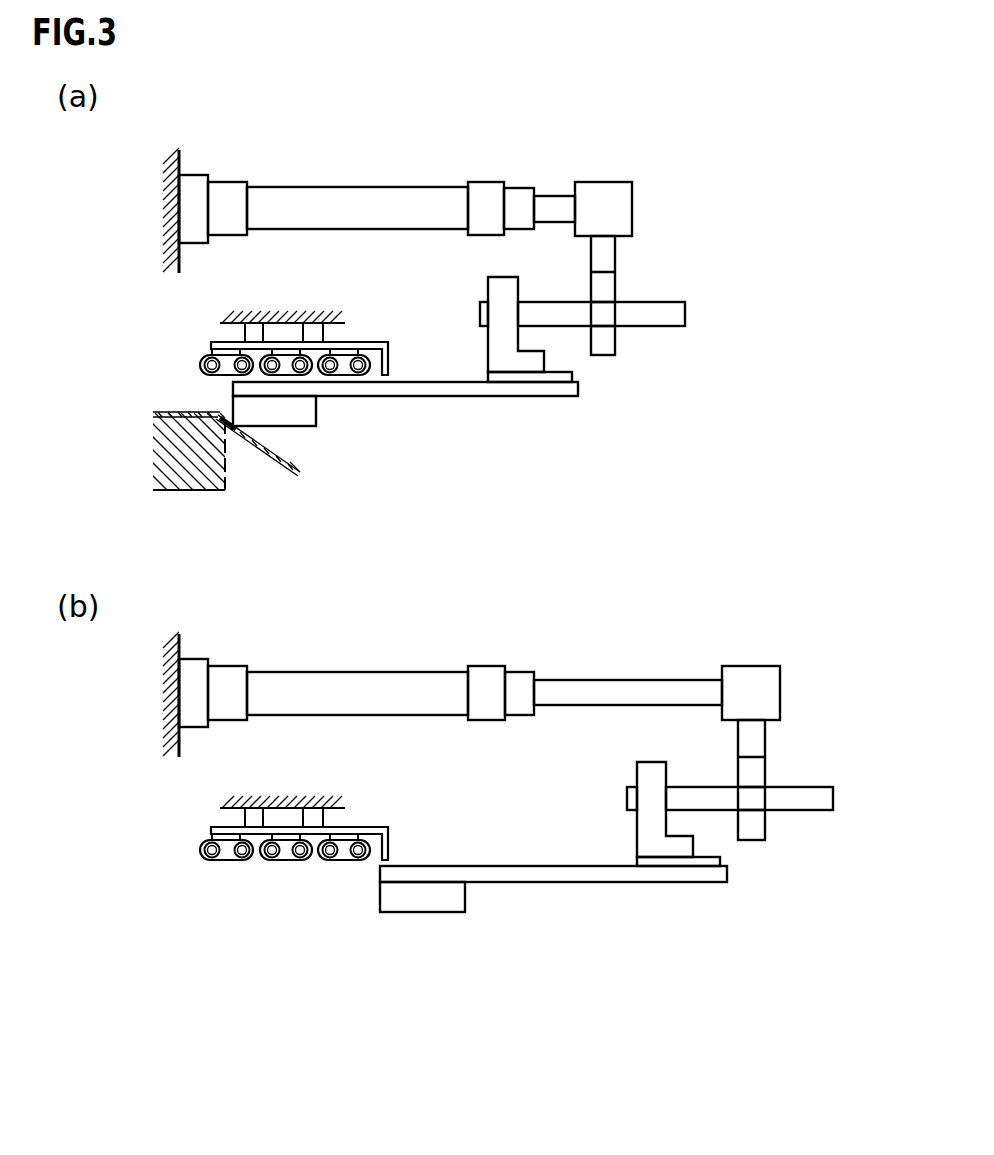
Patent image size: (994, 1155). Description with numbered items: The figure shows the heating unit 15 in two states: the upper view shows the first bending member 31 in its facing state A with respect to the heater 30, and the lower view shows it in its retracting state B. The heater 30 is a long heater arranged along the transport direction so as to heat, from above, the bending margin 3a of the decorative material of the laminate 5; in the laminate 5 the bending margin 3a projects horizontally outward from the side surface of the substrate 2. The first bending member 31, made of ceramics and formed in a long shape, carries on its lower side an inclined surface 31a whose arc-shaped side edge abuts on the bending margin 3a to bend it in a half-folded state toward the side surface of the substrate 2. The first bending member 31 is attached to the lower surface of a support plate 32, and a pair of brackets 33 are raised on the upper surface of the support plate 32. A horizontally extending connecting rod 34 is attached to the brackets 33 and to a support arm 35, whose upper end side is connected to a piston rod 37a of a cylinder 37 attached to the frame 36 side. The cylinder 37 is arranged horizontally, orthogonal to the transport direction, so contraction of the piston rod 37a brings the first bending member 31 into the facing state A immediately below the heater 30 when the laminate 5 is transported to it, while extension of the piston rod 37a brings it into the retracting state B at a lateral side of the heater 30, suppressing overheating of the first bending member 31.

The substrate 2 is at (198, 492).
The bending margin 3a is at (290, 461).
The laminate 5 is at (153, 465).
The heating unit 15 is at (505, 477).
The heater 30 is at (179, 369).
The first bending member 31 is at (233, 420).
The inclined surface 31a is at (235, 430).
The support plate 32 is at (448, 397).
The brackets 33 is at (487, 292).
The connecting rod 34 is at (657, 327).
The support arm 35 is at (617, 250).
The frame 36 is at (183, 160).
The cylinder 37 is at (400, 187).
The piston rod 37a is at (548, 194).
The facing state A is at (344, 458).
The retracting state B is at (445, 936).